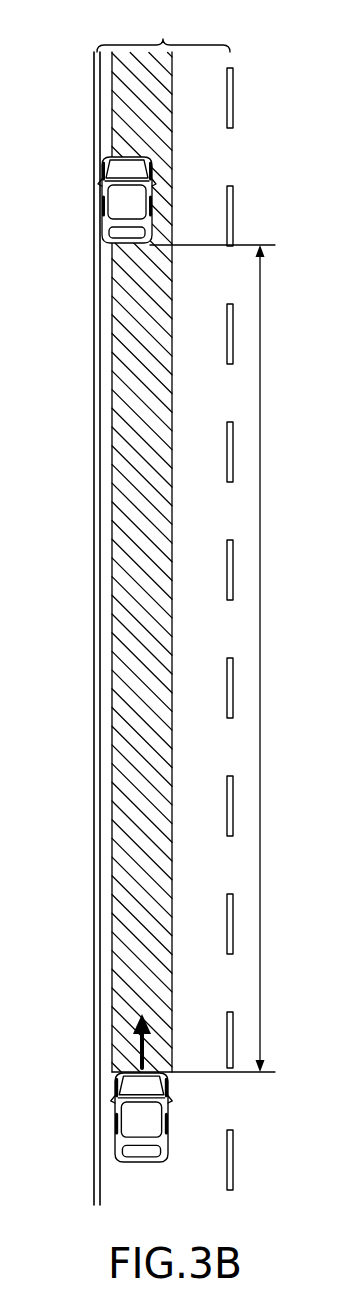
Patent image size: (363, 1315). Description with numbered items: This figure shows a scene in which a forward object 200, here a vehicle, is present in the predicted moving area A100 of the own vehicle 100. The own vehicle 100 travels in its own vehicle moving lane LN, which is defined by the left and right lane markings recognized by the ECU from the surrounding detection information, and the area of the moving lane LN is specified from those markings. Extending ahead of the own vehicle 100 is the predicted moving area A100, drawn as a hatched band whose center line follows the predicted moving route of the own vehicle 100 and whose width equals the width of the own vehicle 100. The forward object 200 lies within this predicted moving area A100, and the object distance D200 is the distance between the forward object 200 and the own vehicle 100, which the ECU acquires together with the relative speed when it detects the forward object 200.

The own vehicle moving lane LN is at (163, 32).
The predicted moving area A100 is at (157, 510).
The object distance D200 is at (217, 658).
The forward object 200 is at (151, 172).
The own vehicle 100 is at (141, 1162).